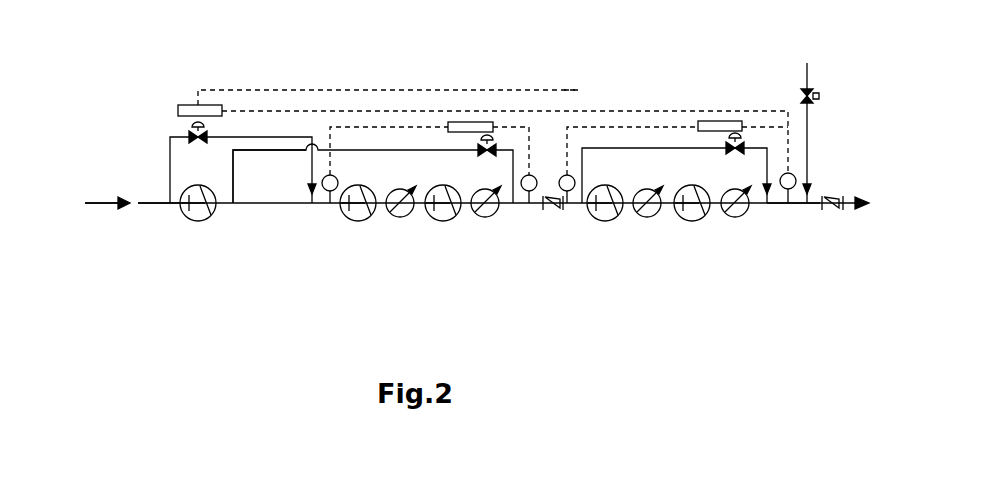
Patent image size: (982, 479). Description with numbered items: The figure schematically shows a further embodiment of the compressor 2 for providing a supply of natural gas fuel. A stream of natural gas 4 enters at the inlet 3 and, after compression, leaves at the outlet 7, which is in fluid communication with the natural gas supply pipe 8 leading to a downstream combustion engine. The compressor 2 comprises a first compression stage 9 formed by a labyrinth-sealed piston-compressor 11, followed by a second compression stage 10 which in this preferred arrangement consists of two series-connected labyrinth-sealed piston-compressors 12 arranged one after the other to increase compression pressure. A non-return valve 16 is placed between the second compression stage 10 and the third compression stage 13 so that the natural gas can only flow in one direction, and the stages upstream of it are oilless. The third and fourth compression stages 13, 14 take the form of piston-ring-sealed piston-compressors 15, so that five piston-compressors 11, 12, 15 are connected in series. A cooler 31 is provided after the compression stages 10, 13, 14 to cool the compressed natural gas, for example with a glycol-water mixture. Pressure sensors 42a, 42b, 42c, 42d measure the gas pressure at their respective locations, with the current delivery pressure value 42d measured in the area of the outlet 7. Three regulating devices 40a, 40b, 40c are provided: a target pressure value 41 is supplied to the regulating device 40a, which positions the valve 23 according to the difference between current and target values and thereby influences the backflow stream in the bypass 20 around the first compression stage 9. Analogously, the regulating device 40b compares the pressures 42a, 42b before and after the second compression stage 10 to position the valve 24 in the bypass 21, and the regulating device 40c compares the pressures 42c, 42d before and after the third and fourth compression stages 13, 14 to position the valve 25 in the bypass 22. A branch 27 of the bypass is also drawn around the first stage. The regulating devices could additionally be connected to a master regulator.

The compressor 2 is at (789, 54).
The inlet 3 is at (153, 206).
The stream of natural gas 4 is at (92, 206).
The outlet 7 is at (799, 207).
The natural gas supply pipe 8 is at (850, 207).
The first compression stage 9 is at (200, 224).
The piston-compressor 11 is at (197, 221).
The second compression stage 10 is at (421, 268).
The piston-compressor 12 is at (363, 238).
The third compression stage 13 is at (602, 222).
The fourth compression stage 14 is at (692, 221).
The piston-ring-sealed piston-compressor 15 is at (604, 221).
The non-return valve 16 is at (551, 211).
The bypass 20 is at (256, 136).
The bypass 21 is at (277, 151).
The bypass 22 is at (643, 148).
The valve 23 is at (189, 137).
The valve 24 is at (487, 158).
The valve 25 is at (733, 151).
The bypass branch 27 is at (269, 176).
The cooler 31 is at (402, 217).
The regulating device 40a is at (187, 105).
The regulating device 40b is at (458, 122).
The regulating device 40c is at (713, 121).
The target pressure value 41 is at (574, 88).
The pressure sensor 42a is at (334, 176).
The pressure sensor 42b is at (527, 175).
The pressure sensor 42c is at (566, 175).
The pressure sensor 42d is at (797, 181).